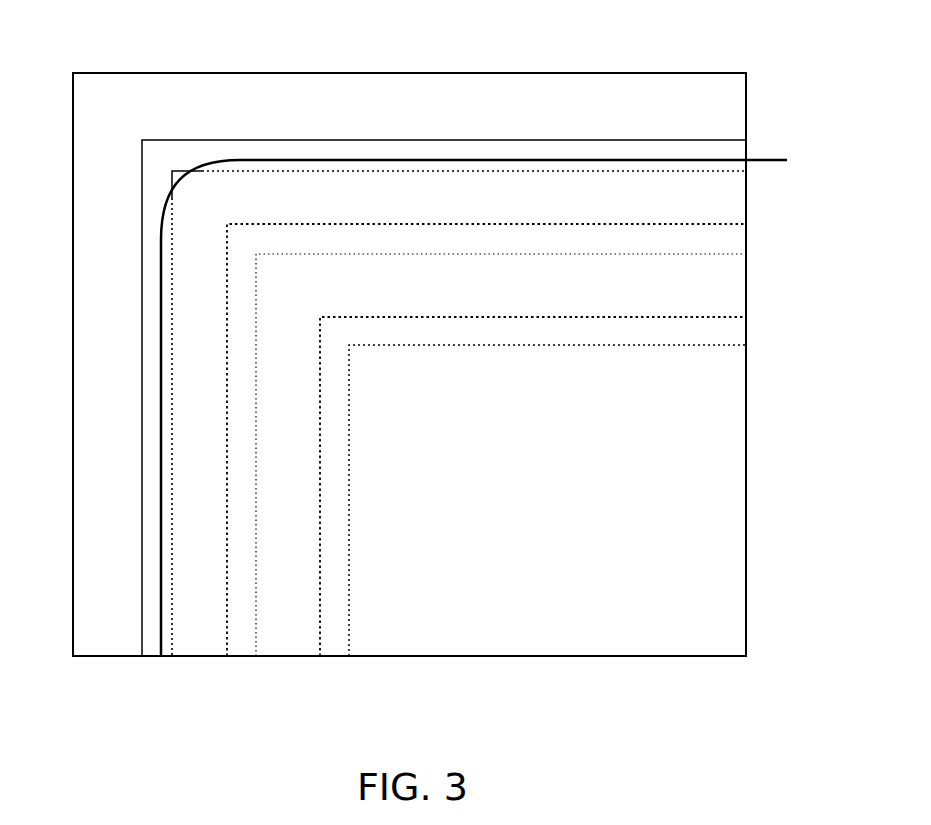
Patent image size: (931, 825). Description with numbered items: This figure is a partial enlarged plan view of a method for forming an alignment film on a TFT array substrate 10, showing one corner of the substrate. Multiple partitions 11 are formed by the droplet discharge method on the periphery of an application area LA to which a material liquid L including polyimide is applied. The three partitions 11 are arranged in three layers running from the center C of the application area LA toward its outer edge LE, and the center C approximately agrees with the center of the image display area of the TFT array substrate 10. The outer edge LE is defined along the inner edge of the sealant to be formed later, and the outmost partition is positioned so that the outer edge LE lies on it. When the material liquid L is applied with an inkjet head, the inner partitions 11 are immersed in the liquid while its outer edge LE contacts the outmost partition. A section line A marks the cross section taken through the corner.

The TFT array substrate 10 is at (305, 95).
The partitions 11 is at (452, 152).
The material liquid L is at (627, 190).
The outer edge LE is at (375, 148).
The application area LA is at (774, 160).
The section line A-A' A is at (64, 490).
The center C is at (760, 669).